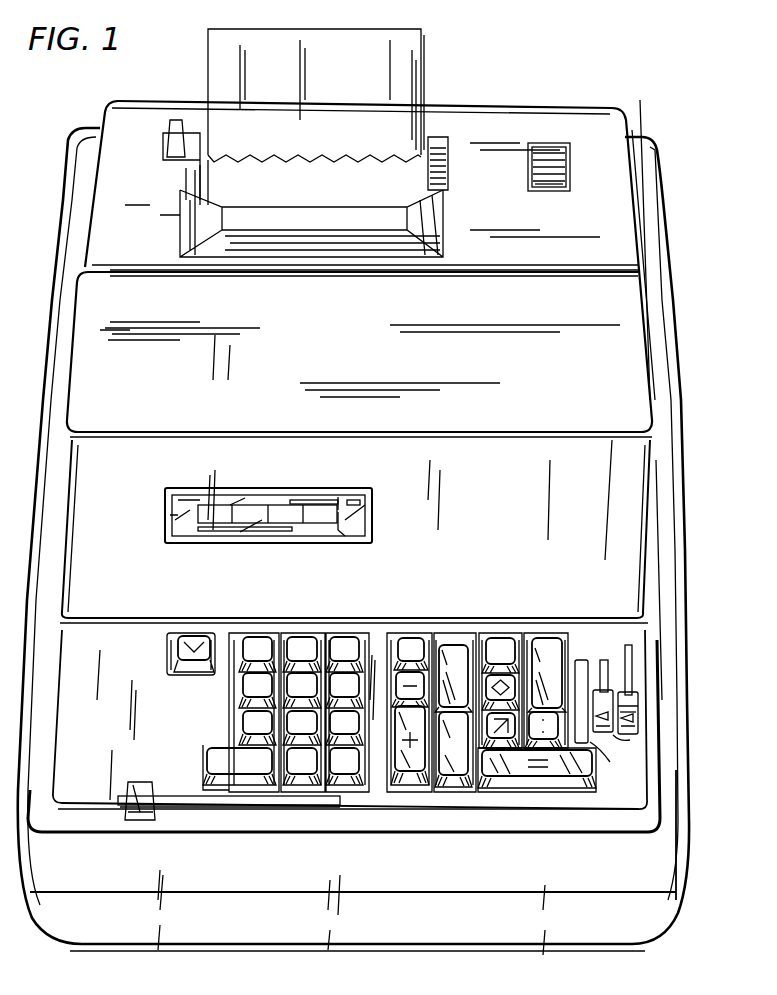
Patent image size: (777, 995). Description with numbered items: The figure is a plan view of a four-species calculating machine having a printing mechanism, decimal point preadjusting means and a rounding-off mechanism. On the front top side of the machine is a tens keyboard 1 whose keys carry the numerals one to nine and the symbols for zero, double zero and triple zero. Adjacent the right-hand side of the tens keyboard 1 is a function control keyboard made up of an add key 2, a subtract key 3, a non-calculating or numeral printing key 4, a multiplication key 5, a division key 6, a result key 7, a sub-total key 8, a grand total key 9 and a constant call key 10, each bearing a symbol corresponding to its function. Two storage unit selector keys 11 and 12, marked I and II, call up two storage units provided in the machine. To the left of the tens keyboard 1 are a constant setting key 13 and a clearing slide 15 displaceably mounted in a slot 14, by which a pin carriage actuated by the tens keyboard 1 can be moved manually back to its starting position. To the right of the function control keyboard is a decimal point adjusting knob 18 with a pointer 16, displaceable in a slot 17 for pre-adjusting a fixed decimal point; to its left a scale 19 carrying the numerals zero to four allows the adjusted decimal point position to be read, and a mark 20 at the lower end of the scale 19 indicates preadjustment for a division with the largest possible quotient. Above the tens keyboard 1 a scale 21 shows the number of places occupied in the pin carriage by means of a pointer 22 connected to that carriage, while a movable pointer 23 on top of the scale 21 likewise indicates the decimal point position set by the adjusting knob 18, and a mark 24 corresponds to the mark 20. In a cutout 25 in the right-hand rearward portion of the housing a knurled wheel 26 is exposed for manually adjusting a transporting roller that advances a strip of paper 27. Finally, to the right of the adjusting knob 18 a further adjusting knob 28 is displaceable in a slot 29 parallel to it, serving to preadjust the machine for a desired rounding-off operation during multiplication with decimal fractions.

The tens keyboard 1 is at (222, 752).
The add key 2 is at (407, 790).
The subtract key 3 is at (394, 688).
The non-calculating or numeral printing key 4 is at (408, 638).
The multiplication key 5 is at (462, 792).
The division key 6 is at (557, 760).
The result key 7 is at (582, 792).
The sub-total key 8 is at (504, 675).
The grand total key 9 is at (494, 638).
The constant call key 10 is at (507, 742).
The storage unit selector key 11 is at (450, 645).
The storage unit selector key 12 is at (542, 640).
The constant setting key 13 is at (168, 660).
The slot 14 is at (211, 805).
The clearing slide 15 is at (144, 783).
The pointer 16 is at (628, 742).
The slot 17 is at (603, 664).
The decimal point adjusting knob 18 is at (640, 699).
The scale 19 is at (581, 660).
The mark 20 is at (604, 762).
The scale 21 is at (180, 513).
The pointer 22 is at (341, 537).
The movable pointer 23 is at (340, 500).
The mark 24 is at (360, 503).
The cutout 25 is at (528, 168).
The knurled wheel 26 is at (556, 186).
The strip of paper 27 is at (421, 84).
The adjusting knob 28 is at (640, 718).
The slot 29 is at (634, 653).